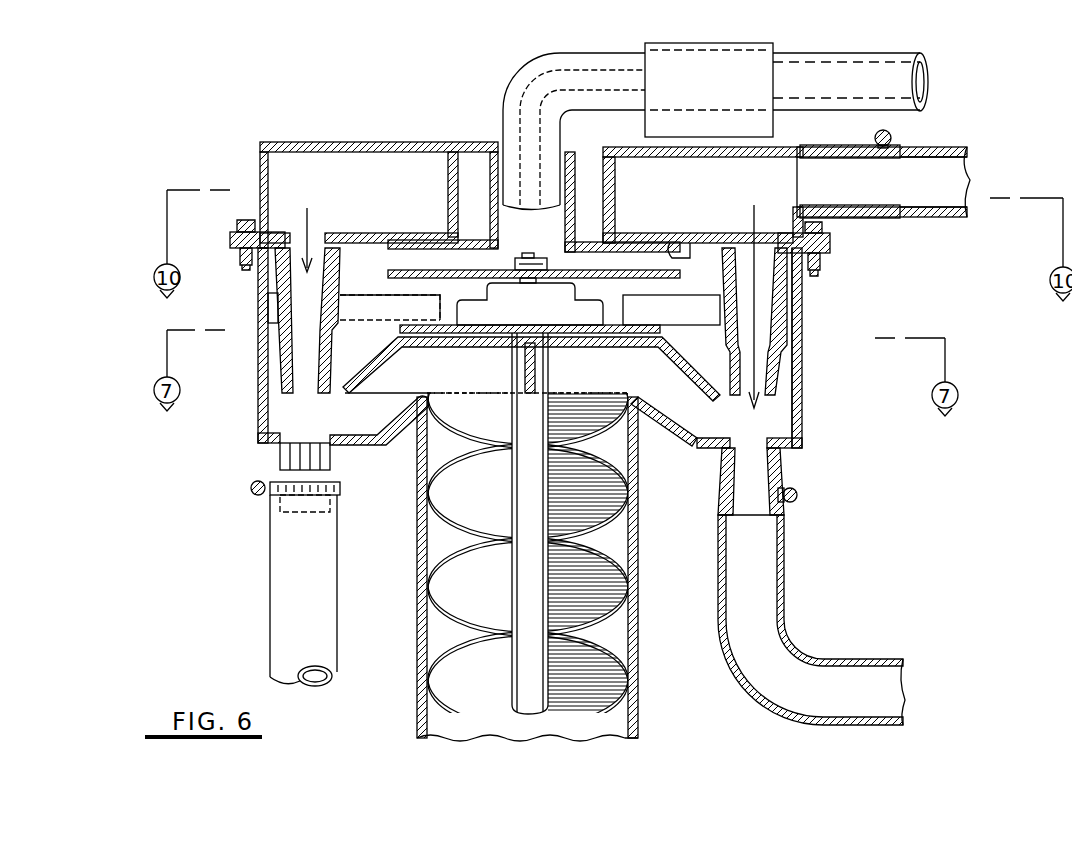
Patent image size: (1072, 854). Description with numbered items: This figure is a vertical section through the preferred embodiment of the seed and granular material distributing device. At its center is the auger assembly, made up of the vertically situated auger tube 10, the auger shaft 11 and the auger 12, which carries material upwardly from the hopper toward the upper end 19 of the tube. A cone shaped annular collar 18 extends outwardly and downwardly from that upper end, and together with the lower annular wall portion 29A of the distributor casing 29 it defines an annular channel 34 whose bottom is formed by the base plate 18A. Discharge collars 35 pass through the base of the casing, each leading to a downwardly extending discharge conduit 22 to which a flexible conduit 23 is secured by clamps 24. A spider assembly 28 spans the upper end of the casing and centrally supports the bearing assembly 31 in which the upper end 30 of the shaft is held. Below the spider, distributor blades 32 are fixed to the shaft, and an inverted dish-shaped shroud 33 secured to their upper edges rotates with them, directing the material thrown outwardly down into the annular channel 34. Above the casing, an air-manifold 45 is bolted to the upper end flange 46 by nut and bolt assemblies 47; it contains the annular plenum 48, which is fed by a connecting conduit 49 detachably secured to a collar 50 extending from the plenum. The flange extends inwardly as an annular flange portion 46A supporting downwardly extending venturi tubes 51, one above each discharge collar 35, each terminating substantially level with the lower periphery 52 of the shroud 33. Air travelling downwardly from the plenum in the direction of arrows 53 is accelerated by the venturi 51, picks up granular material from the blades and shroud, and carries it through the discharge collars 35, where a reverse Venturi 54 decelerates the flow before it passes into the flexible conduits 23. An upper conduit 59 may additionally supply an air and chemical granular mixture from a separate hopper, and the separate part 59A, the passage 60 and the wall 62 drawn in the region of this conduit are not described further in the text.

The auger tube 10 is at (640, 626).
The auger shaft 11 is at (515, 578).
The auger 12 is at (595, 520).
The cone shaped annular collar 18 is at (398, 420).
The base plate 18A is at (345, 445).
The upper end 19 is at (640, 390).
The discharge conduit 22 is at (780, 420).
The flexible conduit 23 is at (280, 560).
The clamp 24 is at (892, 135).
The spider assembly 28 is at (668, 303).
The distributor casing 29 is at (802, 310).
The lower annular wall portion 29A is at (803, 440).
The upper end of auger shaft 30 is at (530, 295).
The bearing assembly 31 is at (560, 300).
The distributor blades 32 is at (672, 393).
The inverted dish-shaped shroud 33 is at (688, 348).
The annular channel 34 is at (688, 440).
The discharge collar 35 is at (285, 458).
The air-manifold 45 is at (894, 229).
The upper end flange 46 is at (830, 245).
The annular flange portion 46A is at (700, 240).
The nut and bolt assemblies 47 is at (822, 272).
The annular plenum 48 is at (340, 158).
The connecting conduit 49 is at (960, 170).
The collar 50 is at (835, 147).
The venturi tube 51 is at (790, 370).
The lower periphery of shroud 52 is at (712, 400).
The arrows 53 is at (735, 313).
The reverse Venturi 54 is at (745, 500).
The upper conduit 59 is at (820, 60).
The elbow 59A is at (508, 150).
The passage 60 is at (580, 148).
The partition wall 62 is at (595, 244).